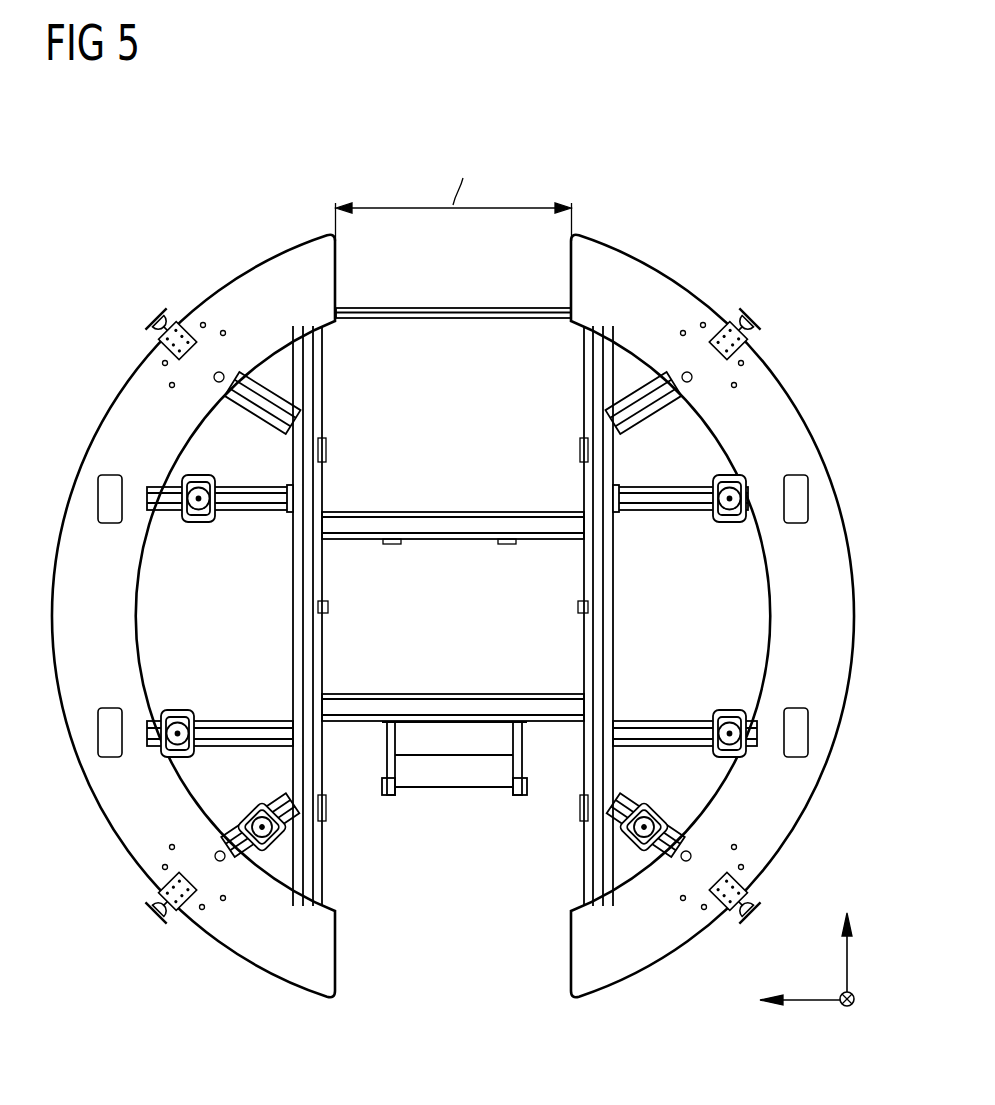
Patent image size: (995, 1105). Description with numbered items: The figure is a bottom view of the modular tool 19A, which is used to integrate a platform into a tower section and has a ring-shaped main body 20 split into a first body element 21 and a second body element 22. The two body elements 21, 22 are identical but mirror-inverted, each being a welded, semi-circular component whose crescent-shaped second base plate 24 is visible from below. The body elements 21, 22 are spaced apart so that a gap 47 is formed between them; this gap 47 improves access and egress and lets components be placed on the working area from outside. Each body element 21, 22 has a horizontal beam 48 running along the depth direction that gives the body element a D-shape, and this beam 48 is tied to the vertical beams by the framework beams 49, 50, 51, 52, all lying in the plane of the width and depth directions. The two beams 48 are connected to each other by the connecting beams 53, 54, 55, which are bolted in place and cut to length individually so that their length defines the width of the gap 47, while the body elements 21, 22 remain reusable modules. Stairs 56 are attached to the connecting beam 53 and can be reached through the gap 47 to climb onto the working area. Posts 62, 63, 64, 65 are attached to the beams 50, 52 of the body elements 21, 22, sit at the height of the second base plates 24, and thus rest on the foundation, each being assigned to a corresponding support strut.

The modular tool 19A is at (218, 168).
The ring-shaped main body 20 is at (512, 1004).
The first body element 21 is at (554, 976).
The second body element 22 is at (352, 976).
The second base plate 24 is at (112, 378).
The gap 47 is at (438, 941).
The horizontal beam 48 is at (293, 598).
The beam 49 is at (258, 378).
The beam 50 is at (283, 487).
The beam 51 is at (244, 721).
The beam 52 is at (226, 835).
The connecting beam 53 is at (375, 692).
The connecting beam 54 is at (378, 510).
The connecting beam 55 is at (491, 320).
The stairs 56 is at (456, 795).
The post 62 is at (730, 525).
The post 63 is at (647, 855).
The post 64 is at (259, 855).
The post 65 is at (198, 525).